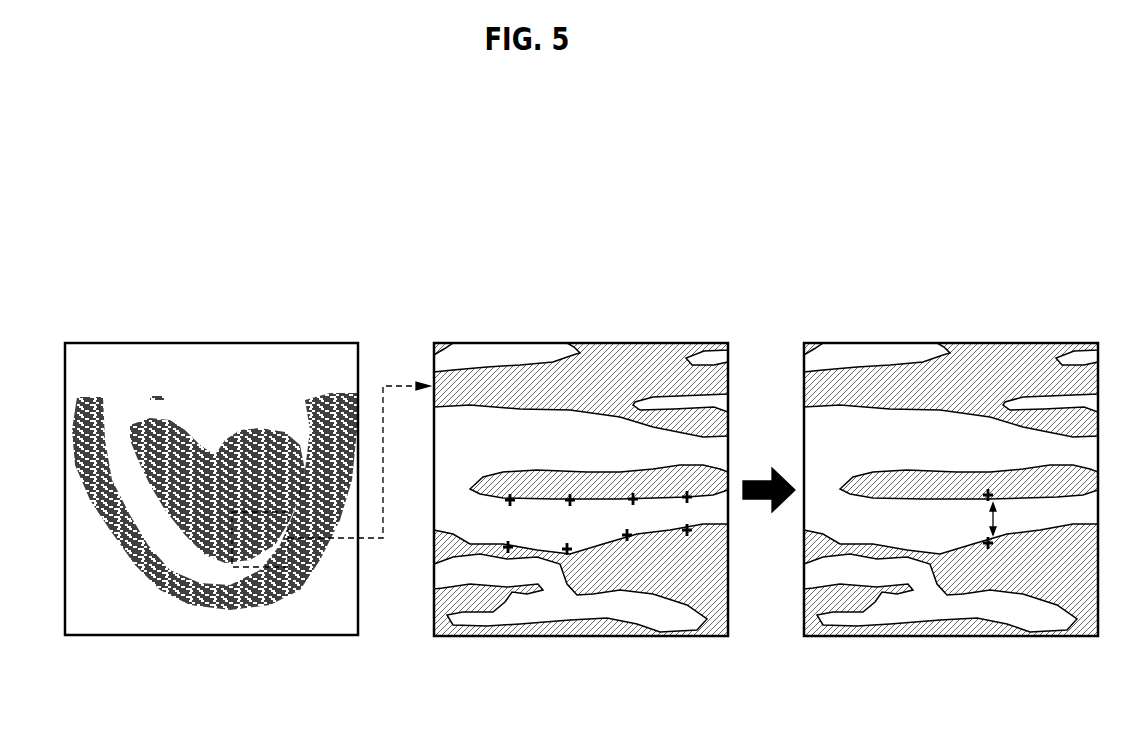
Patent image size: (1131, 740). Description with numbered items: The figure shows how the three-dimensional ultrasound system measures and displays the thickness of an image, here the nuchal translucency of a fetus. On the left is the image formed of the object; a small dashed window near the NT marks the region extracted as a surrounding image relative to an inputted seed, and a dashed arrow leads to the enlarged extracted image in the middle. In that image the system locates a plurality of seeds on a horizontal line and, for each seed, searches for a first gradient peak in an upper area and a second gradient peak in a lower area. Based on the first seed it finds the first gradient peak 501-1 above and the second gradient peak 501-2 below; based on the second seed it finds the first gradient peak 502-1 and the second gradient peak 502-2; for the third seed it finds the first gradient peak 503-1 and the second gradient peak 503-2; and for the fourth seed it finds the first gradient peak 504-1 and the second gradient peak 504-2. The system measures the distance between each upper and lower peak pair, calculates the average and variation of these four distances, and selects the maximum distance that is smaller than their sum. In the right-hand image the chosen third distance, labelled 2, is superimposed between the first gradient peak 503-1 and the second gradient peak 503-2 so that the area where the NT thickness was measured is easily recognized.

The first gradient peak_#1 501-1 is at (510, 494).
The second gradient peak_#1 501-2 is at (508, 553).
The first gradient peak_#2 502-1 is at (570, 494).
The second gradient peak_#2 502-2 is at (567, 555).
The first gradient peak_#3 503-1 is at (633, 493).
The second gradient peak_#3 503-2 is at (627, 541).
The first gradient peak_#4 504-1 is at (687, 491).
The second gradient peak_#4 504-2 is at (687, 536).
The distance between feature points 2 is at (1003, 519).